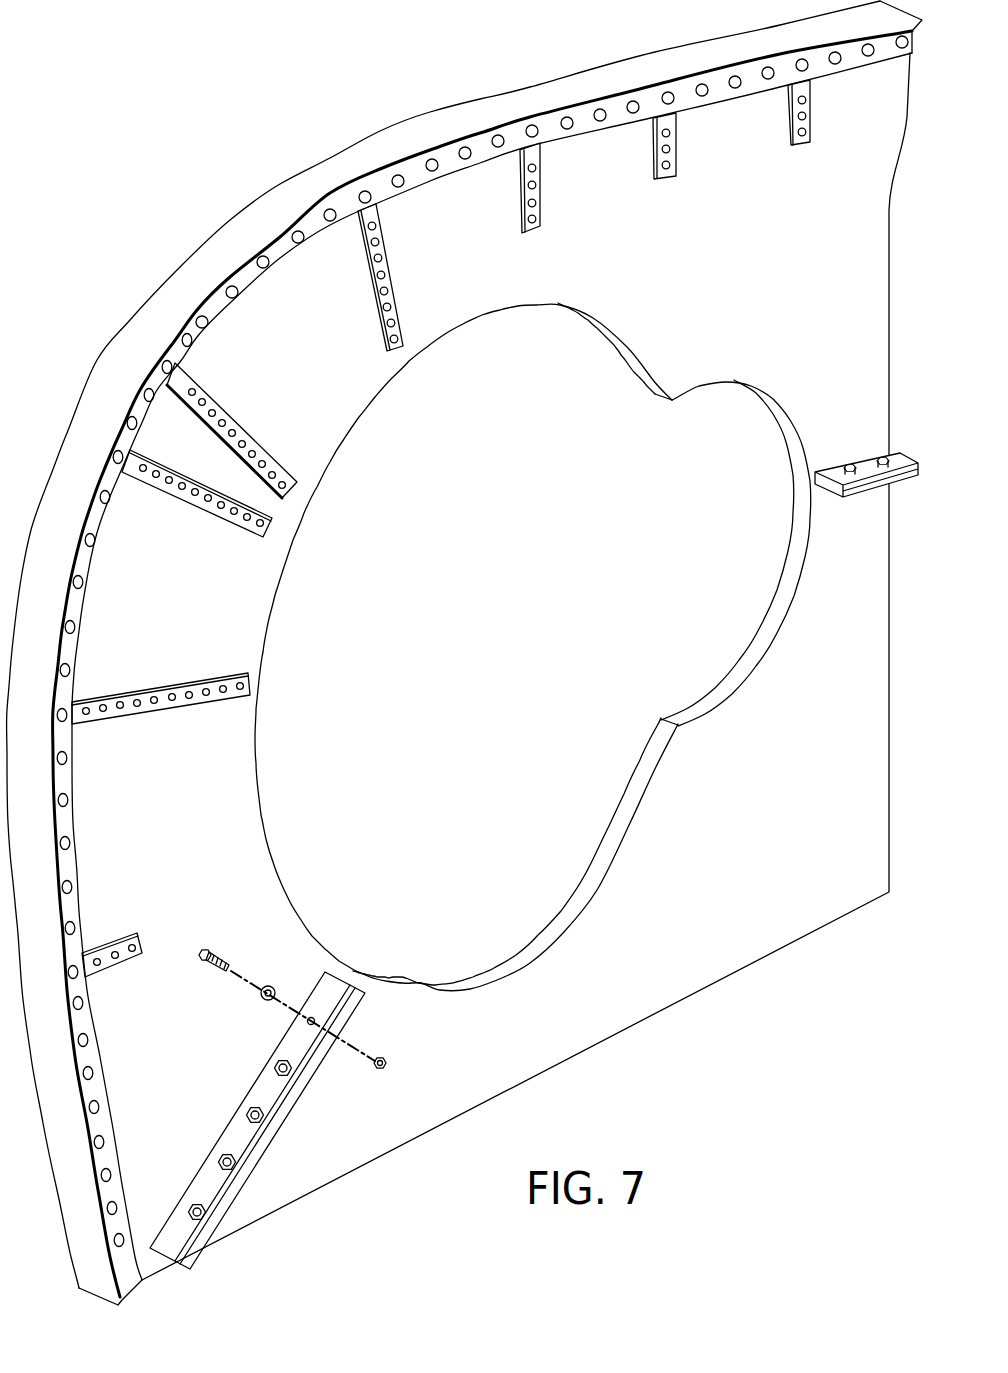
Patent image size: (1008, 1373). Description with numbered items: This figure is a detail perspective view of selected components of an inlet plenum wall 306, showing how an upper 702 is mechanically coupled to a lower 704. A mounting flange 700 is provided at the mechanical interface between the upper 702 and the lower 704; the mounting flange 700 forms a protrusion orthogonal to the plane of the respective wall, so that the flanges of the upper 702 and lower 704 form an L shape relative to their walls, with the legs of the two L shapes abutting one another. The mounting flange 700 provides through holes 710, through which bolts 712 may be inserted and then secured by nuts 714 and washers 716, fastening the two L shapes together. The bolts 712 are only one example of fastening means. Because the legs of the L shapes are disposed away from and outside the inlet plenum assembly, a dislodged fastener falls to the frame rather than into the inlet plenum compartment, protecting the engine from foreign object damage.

The inlet plenum wall 306 is at (263, 60).
The upper 702 is at (226, 221).
The lower 704 is at (626, 1032).
The mounting flange 700 is at (846, 435).
The through holes 710 is at (306, 1025).
The bolts 712 is at (207, 948).
The nuts 714 is at (388, 1069).
The washers 716 is at (262, 997).